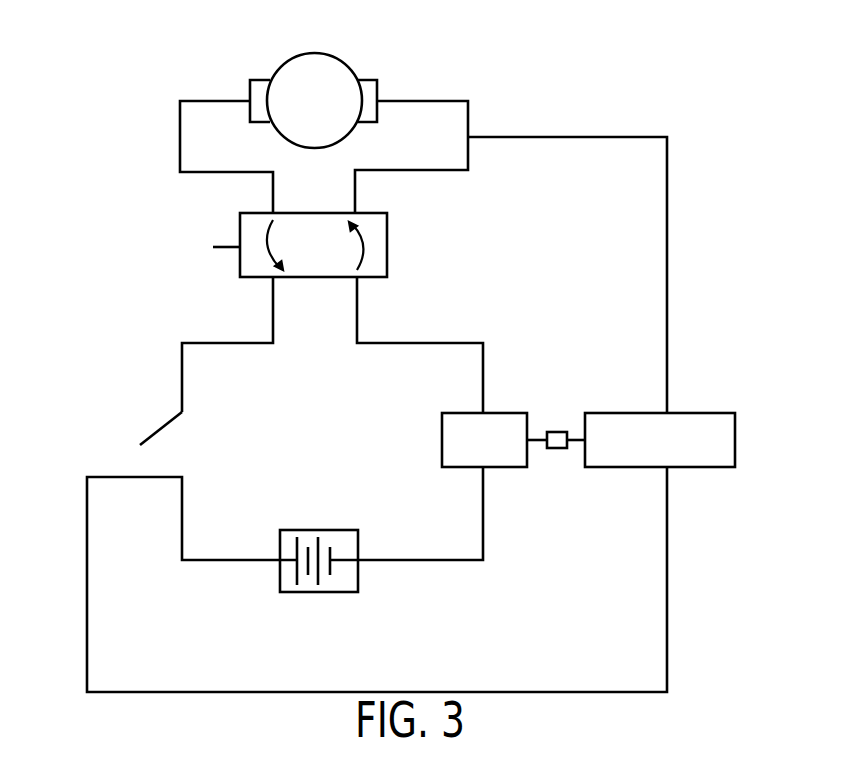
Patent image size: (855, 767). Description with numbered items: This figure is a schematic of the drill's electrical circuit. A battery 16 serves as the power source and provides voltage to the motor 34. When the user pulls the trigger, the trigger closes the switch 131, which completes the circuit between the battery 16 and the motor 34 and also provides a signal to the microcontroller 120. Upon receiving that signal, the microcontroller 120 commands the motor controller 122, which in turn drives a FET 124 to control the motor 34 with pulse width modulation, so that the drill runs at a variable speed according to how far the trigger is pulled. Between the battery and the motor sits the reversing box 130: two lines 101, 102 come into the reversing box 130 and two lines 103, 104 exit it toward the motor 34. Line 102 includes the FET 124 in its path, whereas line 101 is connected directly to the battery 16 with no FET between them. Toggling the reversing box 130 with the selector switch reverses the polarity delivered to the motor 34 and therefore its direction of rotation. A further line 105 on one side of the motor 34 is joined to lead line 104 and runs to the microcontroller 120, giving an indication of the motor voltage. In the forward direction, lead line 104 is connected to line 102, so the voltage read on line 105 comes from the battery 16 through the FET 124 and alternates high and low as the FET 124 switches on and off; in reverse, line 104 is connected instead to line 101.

The motor 34 is at (342, 60).
The line 103 is at (210, 168).
The lead line 104 is at (417, 167).
The line 105 is at (667, 175).
The reversing box 130 is at (387, 238).
The line 101 is at (272, 315).
The line 102 is at (358, 315).
The switch 131 is at (163, 427).
The FET 124 is at (518, 498).
The motor controller 122 is at (557, 448).
The microcontroller 120 is at (735, 440).
The battery 16 is at (315, 593).